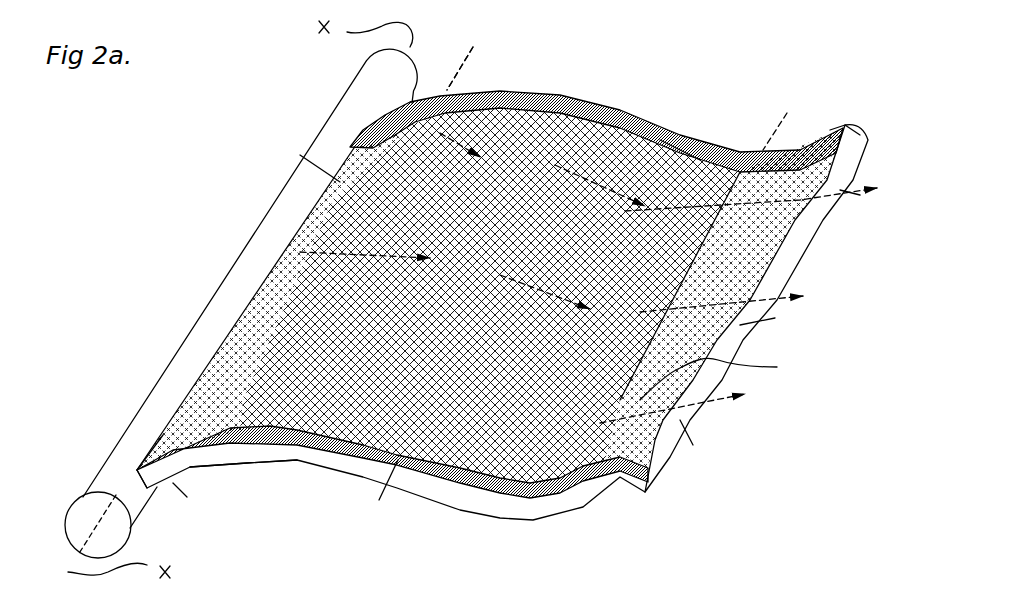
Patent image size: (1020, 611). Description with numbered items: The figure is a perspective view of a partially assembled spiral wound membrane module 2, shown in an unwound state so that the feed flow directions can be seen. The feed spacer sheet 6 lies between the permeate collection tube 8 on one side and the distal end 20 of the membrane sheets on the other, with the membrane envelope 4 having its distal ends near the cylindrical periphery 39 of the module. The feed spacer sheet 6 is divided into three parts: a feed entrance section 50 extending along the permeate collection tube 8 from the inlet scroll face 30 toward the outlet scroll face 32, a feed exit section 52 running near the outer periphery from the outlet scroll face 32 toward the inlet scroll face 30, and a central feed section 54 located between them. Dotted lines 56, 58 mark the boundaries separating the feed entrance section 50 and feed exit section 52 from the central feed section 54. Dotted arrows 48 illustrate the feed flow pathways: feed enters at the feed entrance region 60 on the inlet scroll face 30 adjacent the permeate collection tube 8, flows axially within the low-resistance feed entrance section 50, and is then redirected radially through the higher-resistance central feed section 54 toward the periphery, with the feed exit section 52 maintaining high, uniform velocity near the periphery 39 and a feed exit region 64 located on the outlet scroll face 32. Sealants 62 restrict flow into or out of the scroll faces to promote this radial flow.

The module 2 is at (218, 205).
The membrane envelope 4 is at (670, 460).
The feed spacer sheet 6 is at (408, 132).
The permeate collection tube 8 is at (182, 342).
The distal end of membrane sheets 20 is at (757, 317).
The inlet scroll face 30 is at (558, 507).
The outlet scroll face 32 is at (677, 133).
The cylindrical periphery 39 is at (693, 430).
The dotted arrows 48 is at (197, 483).
The feed entrance section 50 is at (335, 183).
The feed exit section 52 is at (777, 367).
The central feed section 54 is at (540, 100).
The dotted line 56 is at (195, 480).
The dotted line 58 is at (527, 513).
The feed entrance region 60 is at (163, 435).
The sealants 62 is at (480, 107).
The feed exit region 64 is at (840, 133).